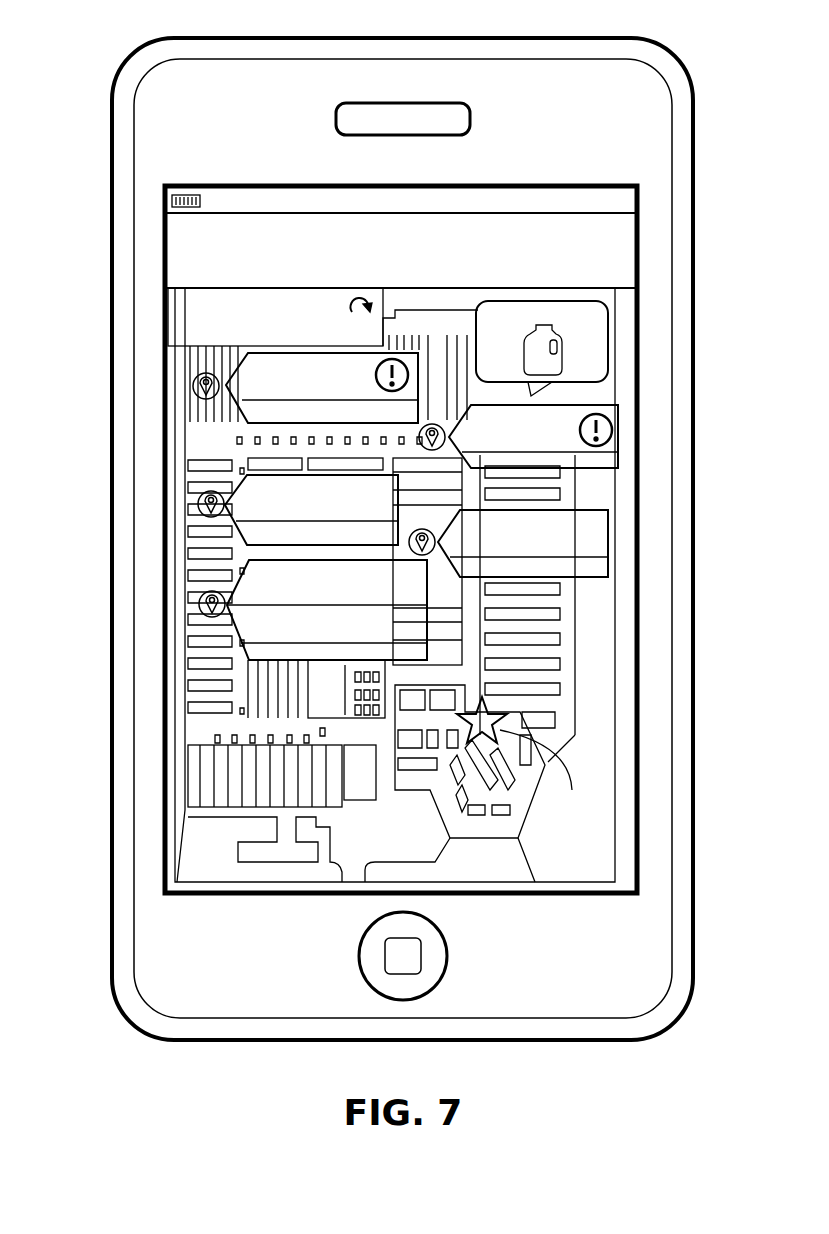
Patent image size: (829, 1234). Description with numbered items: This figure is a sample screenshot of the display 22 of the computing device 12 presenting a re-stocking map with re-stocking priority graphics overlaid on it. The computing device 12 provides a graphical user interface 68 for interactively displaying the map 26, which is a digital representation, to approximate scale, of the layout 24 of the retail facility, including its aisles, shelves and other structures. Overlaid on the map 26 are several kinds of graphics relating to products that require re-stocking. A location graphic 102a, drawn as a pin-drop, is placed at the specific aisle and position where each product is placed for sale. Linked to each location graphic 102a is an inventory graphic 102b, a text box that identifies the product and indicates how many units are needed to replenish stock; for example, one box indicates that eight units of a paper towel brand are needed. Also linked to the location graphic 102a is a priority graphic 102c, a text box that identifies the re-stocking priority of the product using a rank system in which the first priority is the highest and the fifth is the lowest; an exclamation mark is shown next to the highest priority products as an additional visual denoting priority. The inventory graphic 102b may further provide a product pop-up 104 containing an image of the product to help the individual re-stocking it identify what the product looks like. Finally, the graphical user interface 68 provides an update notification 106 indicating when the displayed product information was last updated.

The computing device 12 is at (683, 50).
The display 22 is at (645, 236).
The graphical user interface 68 is at (163, 252).
The map 26 is at (610, 300).
The update notifications 106 is at (168, 340).
The product pop-up 104 is at (608, 345).
The location graphic 102a is at (194, 384).
The inventory graphic 102b is at (243, 418).
The priority graphic 102c is at (610, 437).
The layout 24 is at (205, 842).